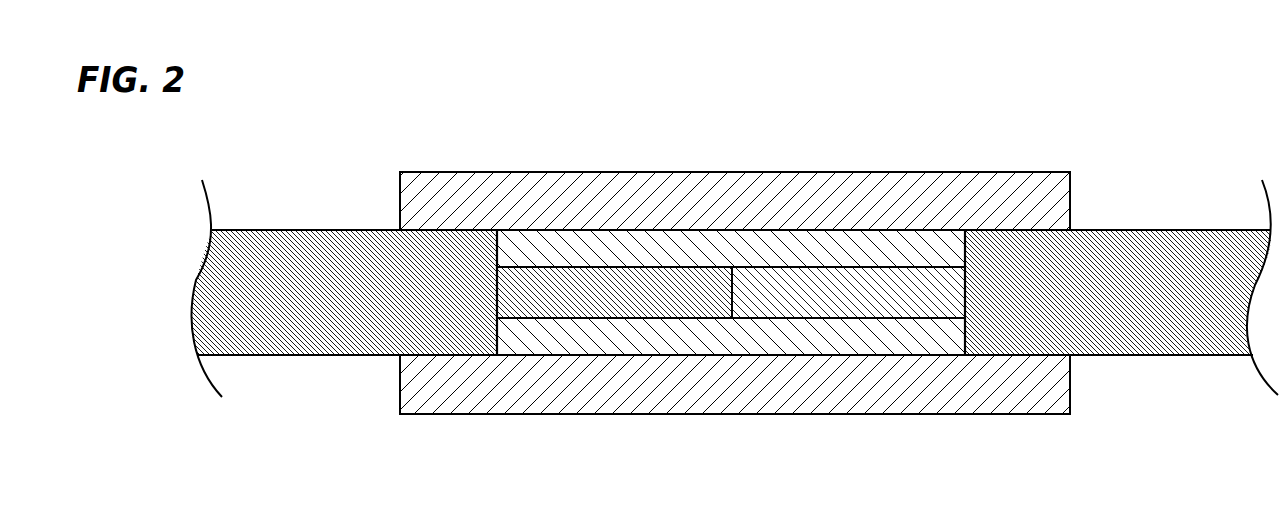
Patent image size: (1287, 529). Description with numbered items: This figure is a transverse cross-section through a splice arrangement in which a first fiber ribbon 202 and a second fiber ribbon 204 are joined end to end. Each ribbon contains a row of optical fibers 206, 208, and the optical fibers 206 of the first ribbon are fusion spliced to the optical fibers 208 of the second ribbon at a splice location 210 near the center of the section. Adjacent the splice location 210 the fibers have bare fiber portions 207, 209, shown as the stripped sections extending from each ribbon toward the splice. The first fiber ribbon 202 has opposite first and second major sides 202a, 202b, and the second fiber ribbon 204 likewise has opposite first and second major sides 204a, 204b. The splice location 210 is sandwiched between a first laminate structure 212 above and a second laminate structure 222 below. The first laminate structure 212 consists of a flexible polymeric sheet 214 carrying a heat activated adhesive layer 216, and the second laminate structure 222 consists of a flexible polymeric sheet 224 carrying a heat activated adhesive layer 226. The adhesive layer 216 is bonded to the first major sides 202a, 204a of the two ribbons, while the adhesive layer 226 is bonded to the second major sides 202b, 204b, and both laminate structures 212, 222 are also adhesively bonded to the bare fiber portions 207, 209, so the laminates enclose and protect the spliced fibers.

The first fiber ribbon 202 is at (267, 356).
The first major side of first fiber ribbon 202a is at (328, 229).
The second major side of first fiber ribbon 202b is at (355, 356).
The second fiber ribbon 204 is at (1180, 355).
The first major side of second fiber ribbon 204a is at (1112, 231).
The second major side of second fiber ribbon 204b is at (1107, 355).
The optical fibers 206 is at (545, 320).
The bare fiber portion 207 is at (683, 267).
The optical fibers 208 is at (852, 320).
The bare fiber portion 209 is at (815, 267).
The splice location 210 is at (732, 332).
The first laminate structure 212 is at (455, 162).
The flexible polymeric sheet 214 is at (1033, 172).
The heat activated adhesive layer 216 is at (743, 257).
The second laminate structure 222 is at (434, 426).
The flexible polymeric sheet 224 is at (1022, 415).
The heat activated adhesive layer 226 is at (697, 342).